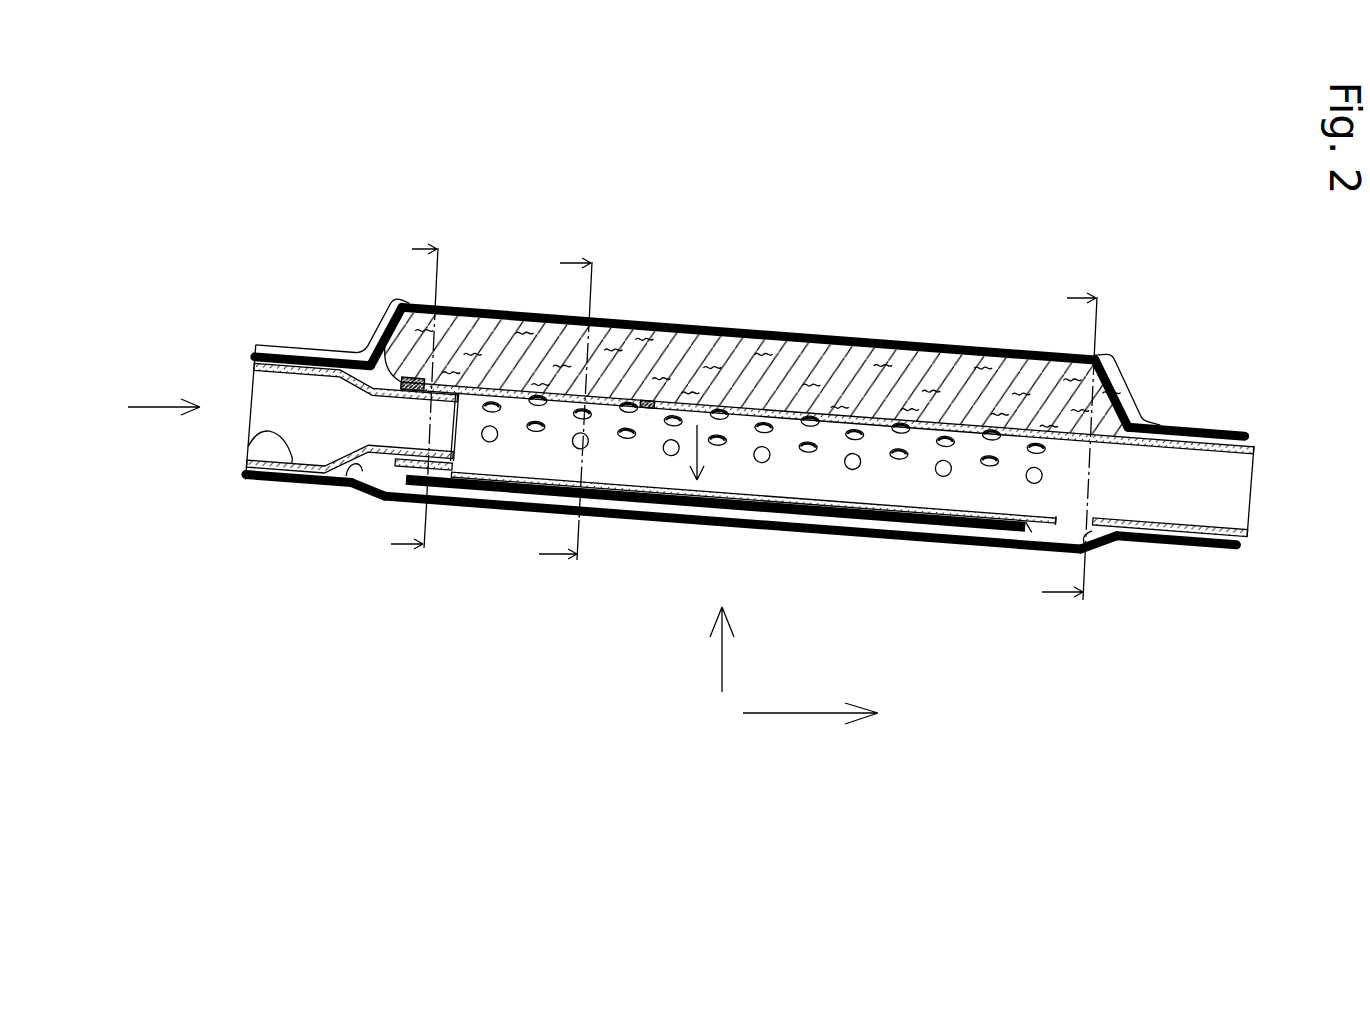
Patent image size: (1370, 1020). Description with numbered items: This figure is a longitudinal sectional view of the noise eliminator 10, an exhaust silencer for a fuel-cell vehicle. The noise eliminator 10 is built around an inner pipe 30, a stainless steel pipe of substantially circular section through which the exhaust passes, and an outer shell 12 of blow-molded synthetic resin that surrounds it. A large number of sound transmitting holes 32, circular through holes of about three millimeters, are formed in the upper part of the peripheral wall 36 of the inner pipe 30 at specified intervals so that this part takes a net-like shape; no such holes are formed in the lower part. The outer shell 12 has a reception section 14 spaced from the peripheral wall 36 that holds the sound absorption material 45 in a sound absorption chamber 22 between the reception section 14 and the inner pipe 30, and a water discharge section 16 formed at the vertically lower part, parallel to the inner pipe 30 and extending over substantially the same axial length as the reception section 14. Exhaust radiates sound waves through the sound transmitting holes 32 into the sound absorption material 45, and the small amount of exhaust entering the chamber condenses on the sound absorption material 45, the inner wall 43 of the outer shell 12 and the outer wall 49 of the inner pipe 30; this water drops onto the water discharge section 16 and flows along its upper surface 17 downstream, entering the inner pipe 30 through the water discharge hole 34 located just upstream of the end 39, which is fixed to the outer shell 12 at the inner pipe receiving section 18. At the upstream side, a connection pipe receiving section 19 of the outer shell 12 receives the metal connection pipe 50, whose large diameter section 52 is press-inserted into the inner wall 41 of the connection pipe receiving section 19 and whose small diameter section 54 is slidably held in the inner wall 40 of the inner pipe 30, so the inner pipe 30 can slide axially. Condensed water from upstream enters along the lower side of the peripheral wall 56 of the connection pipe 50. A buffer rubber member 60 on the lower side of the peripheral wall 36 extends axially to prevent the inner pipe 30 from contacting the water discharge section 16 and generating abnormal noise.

The noise eliminator 10 is at (1027, 177).
The outer shell 12 is at (762, 313).
The reception section 14 is at (706, 326).
The water discharge section 16 is at (877, 537).
The upper surface 17 is at (735, 512).
The inner pipe receiving section 18 is at (1190, 418).
The connection pipe receiving section 19 is at (318, 343).
The sound absorption chamber 22 is at (953, 380).
The inner pipe 30 is at (1268, 493).
The sound transmitting holes 32 is at (489, 388).
The water discharge hole 34 is at (1106, 553).
The peripheral wall 36 is at (1052, 530).
The end 39 is at (1188, 548).
The inner wall 40 is at (484, 468).
The inner wall 41 is at (371, 490).
The inner wall 43 is at (628, 320).
The sound absorption material 45 is at (752, 381).
The outer wall 49 is at (652, 390).
The connection pipe 50 is at (283, 382).
The large diameter section 52 is at (256, 430).
The small diameter section 54 is at (393, 428).
The peripheral wall 56 is at (362, 480).
The buffer rubber member 60 is at (806, 518).